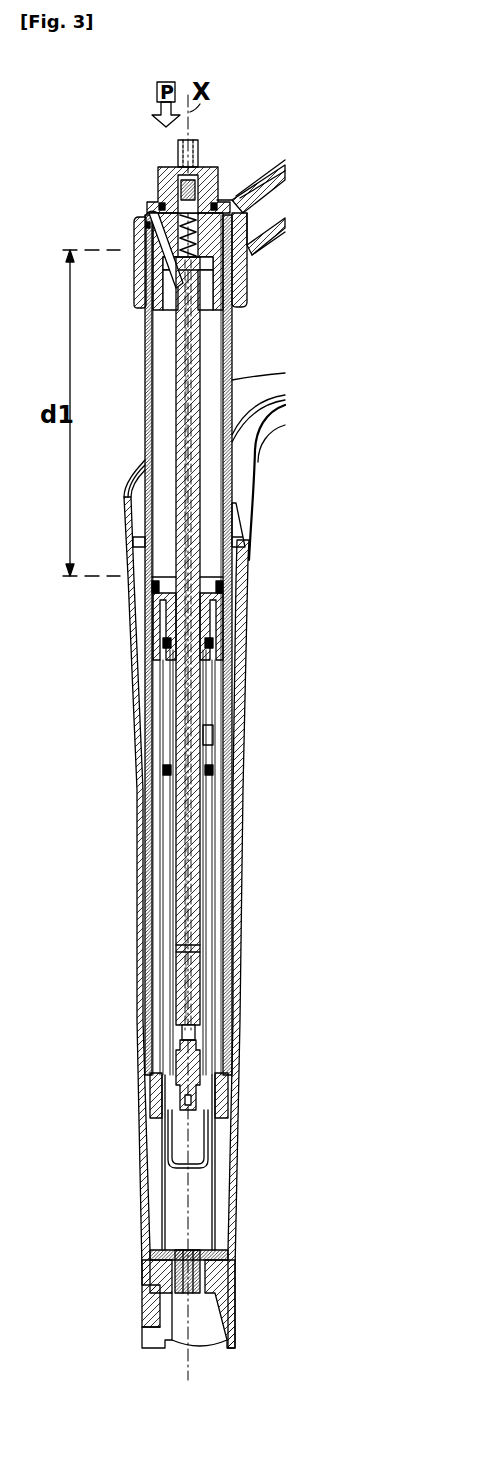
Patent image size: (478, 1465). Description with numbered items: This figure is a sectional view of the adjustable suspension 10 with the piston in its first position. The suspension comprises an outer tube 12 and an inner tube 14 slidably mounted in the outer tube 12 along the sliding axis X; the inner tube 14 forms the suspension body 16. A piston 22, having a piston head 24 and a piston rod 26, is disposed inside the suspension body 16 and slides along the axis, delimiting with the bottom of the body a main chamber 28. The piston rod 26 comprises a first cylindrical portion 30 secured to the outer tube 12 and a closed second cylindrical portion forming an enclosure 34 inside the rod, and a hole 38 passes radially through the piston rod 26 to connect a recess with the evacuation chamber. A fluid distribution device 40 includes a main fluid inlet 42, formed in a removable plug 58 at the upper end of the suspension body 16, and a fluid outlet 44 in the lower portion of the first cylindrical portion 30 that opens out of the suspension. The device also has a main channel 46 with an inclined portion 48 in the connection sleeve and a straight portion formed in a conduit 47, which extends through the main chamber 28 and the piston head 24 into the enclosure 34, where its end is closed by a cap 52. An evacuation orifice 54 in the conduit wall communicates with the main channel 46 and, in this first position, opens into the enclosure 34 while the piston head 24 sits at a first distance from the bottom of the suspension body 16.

The adjustable suspension 10 is at (197, 727).
The outer tube 12 is at (240, 1080).
The inner tube 14 is at (145, 424).
The suspension body 16 is at (145, 387).
The piston 22 is at (210, 626).
The piston head 24 is at (226, 582).
The piston rod 26 is at (165, 624).
The main chamber 28 is at (240, 535).
The first cylindrical portion 30 is at (216, 1172).
The enclosure 34 is at (176, 1170).
The hole 38 is at (212, 736).
The fluid distribution device 40 is at (175, 208).
The main fluid inlet 42 is at (200, 145).
The fluid outlet 44 is at (201, 1285).
The main channel 46 is at (190, 462).
The conduit 47 is at (205, 355).
The inclined portion 48 is at (150, 182).
The cap 52 is at (198, 1042).
The evacuation orifice 54 is at (198, 950).
The removable plug 58 is at (170, 172).